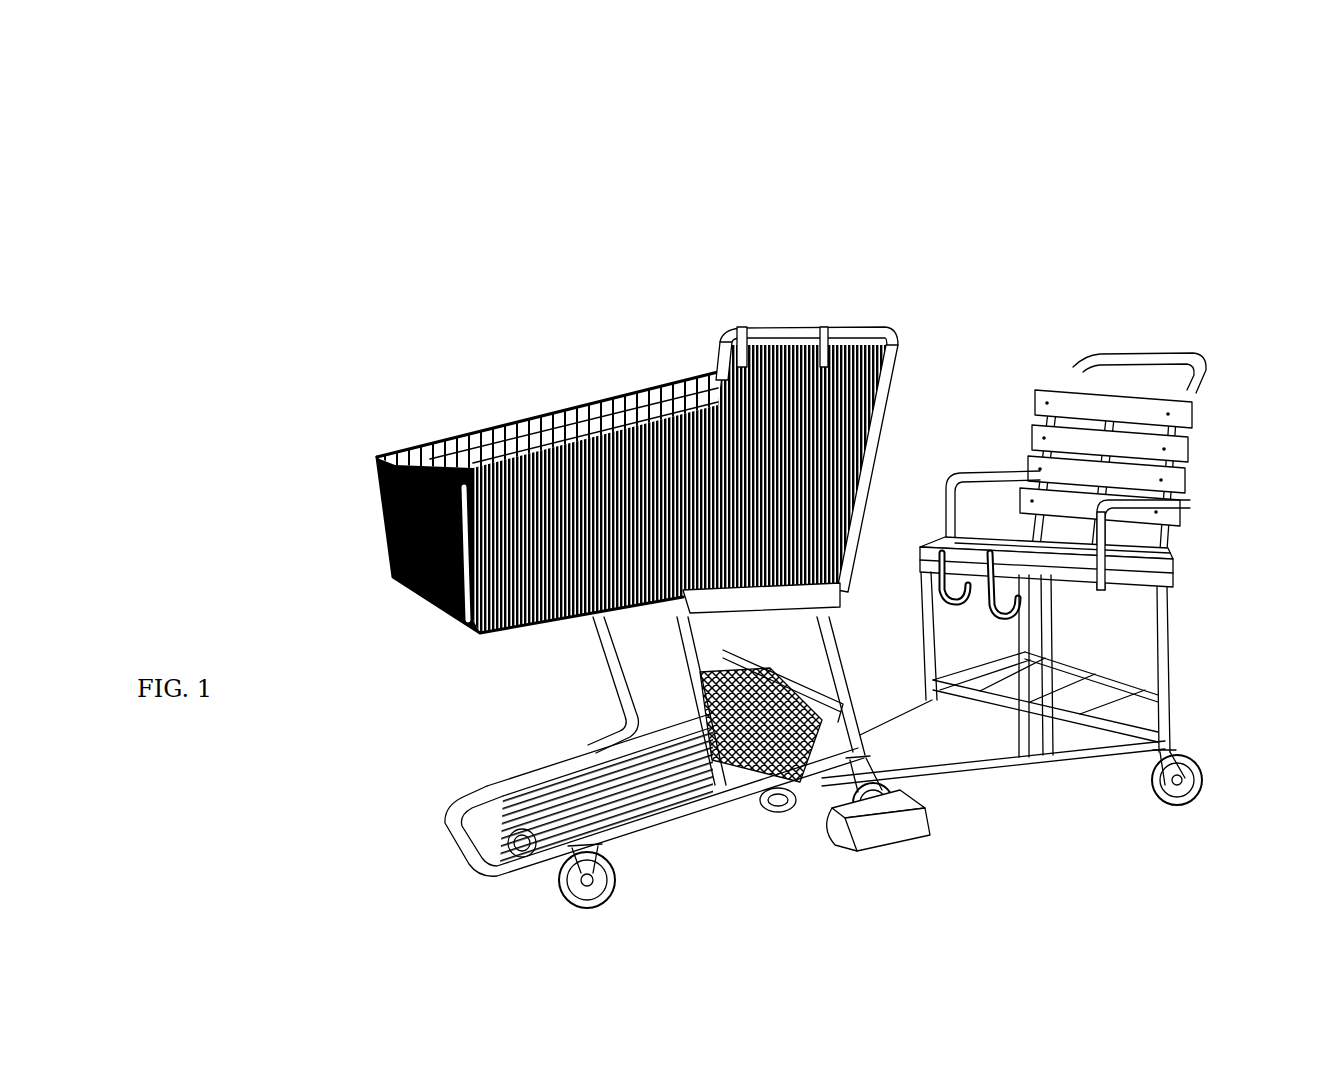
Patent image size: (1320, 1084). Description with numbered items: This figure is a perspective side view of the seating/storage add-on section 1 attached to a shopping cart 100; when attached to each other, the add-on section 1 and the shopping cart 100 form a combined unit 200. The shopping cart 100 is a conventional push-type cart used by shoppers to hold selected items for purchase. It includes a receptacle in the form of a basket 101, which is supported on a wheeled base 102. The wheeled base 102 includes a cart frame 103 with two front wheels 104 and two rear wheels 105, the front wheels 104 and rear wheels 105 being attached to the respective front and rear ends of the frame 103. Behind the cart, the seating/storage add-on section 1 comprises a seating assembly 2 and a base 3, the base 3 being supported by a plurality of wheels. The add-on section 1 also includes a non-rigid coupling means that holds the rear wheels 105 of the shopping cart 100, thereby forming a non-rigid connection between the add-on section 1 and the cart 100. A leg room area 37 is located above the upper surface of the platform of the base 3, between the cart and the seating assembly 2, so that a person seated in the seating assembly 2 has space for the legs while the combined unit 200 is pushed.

The combined unit 200 is at (1199, 134).
The shopping cart 100 is at (365, 494).
The basket 101 is at (537, 415).
The wheeled base 102 is at (457, 800).
The cart frame 103 is at (573, 757).
The front wheels 104 is at (560, 900).
The rear wheels 105 is at (757, 713).
The leg room area 37 is at (888, 676).
The seating/storage add-on section 1 is at (1034, 373).
The seating assembly 2 is at (1220, 725).
The base 3 is at (973, 773).